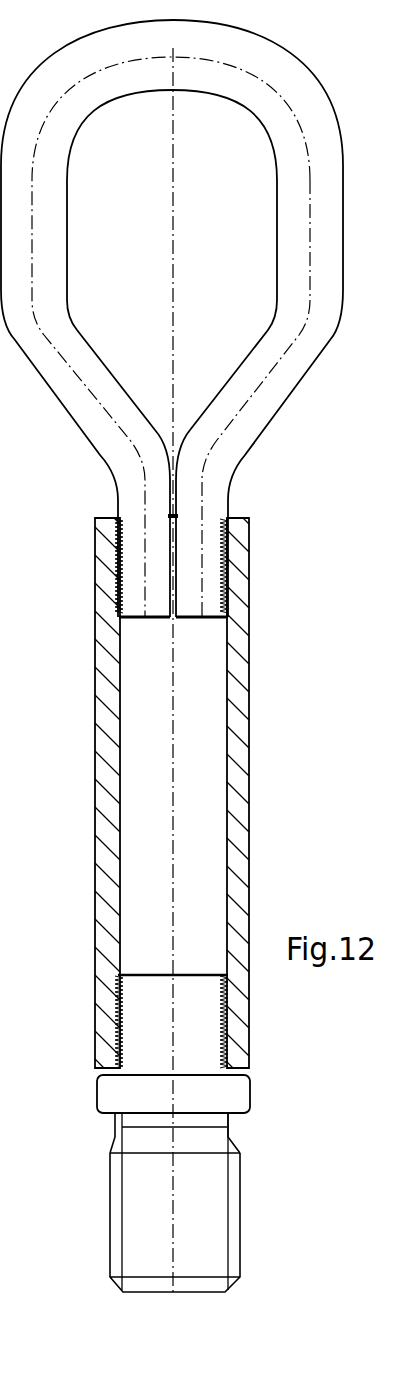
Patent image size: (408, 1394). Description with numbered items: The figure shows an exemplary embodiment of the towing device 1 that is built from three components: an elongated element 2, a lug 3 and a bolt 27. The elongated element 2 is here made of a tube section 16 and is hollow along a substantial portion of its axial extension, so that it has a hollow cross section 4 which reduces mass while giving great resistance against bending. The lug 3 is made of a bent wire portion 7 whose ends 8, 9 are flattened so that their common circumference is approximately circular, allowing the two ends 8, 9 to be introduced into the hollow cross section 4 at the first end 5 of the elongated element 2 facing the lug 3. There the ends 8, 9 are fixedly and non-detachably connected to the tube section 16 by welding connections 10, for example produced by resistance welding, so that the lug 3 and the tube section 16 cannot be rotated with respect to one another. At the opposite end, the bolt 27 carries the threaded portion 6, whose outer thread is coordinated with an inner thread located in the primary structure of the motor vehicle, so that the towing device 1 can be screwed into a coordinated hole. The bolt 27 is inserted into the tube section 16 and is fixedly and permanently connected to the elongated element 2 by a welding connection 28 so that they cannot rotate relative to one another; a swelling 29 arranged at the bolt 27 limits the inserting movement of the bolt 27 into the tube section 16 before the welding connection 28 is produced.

The towing device 1 is at (273, 840).
The elongated element 2 is at (252, 780).
The lug 3 is at (345, 295).
The hollow cross section 4 is at (193, 687).
The first end 5 is at (240, 518).
The threaded portion 6 is at (232, 1213).
The wire portion 7 is at (327, 257).
The end of wire portion 8 is at (135, 545).
The end of wire portion 9 is at (210, 545).
The welding connections 10 is at (228, 583).
The tube section 16 is at (240, 710).
The bolt 27 is at (252, 1100).
The welding connection 28 is at (230, 1025).
The swelling 29 is at (223, 1091).